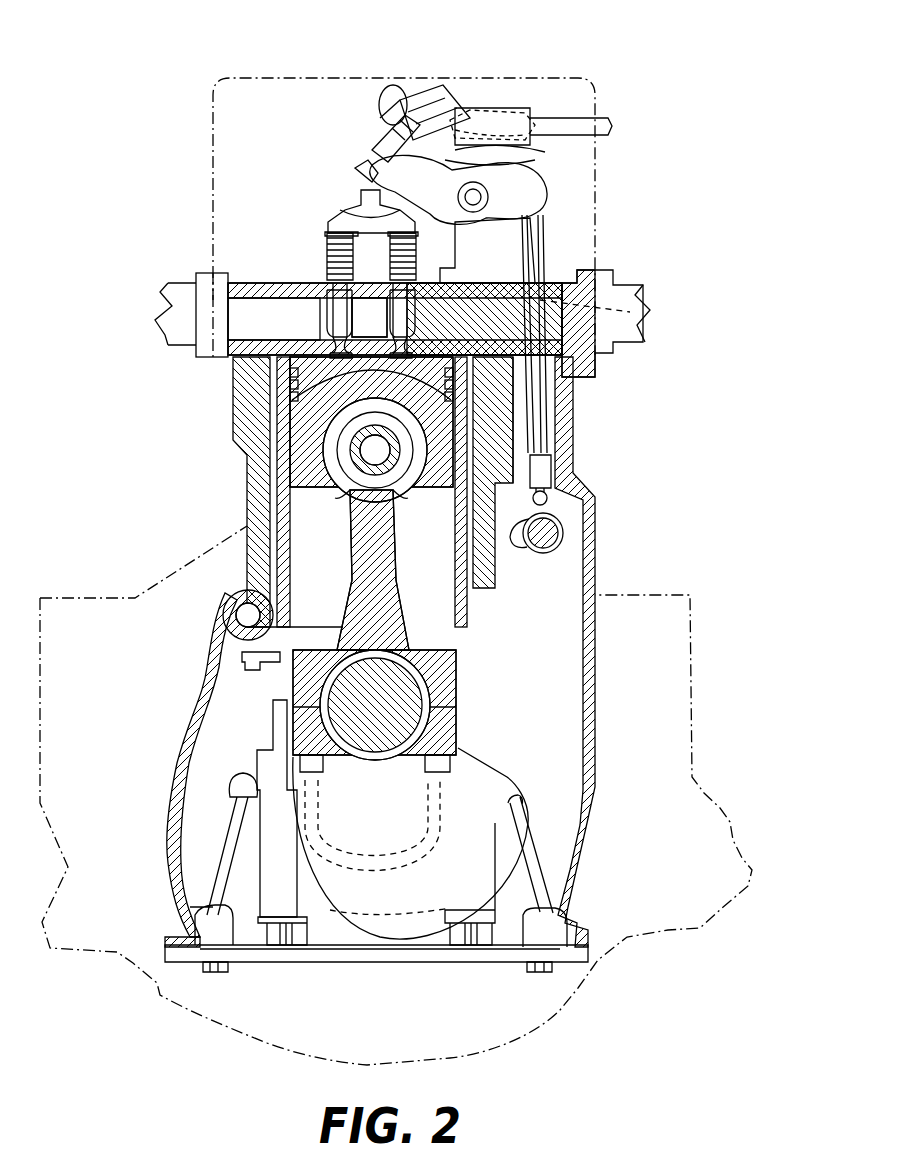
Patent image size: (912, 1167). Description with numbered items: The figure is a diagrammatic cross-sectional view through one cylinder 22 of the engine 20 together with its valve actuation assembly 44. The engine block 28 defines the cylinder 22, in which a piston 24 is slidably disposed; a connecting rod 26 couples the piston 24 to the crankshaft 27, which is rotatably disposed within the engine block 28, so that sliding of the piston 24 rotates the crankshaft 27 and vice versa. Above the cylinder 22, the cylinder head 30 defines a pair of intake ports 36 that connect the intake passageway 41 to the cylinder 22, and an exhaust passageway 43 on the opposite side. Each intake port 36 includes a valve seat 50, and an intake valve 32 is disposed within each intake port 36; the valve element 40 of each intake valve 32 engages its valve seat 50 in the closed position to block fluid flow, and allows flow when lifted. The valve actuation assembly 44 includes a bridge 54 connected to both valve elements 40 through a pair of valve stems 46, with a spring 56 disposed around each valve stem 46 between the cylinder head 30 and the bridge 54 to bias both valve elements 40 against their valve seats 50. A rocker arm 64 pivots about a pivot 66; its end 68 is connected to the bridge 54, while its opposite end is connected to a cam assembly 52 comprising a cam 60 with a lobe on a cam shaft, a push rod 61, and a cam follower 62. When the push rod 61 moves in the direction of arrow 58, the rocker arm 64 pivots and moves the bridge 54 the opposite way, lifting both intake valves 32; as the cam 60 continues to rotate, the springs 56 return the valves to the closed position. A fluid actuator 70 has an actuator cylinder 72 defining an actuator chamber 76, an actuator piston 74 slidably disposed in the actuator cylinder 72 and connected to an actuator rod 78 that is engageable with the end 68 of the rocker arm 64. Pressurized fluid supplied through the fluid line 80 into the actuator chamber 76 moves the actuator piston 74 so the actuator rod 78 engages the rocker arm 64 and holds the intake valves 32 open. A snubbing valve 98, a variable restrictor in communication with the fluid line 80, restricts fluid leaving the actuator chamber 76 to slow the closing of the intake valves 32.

The engine 20 is at (690, 192).
The cylinder 22 is at (298, 520).
The piston 24 is at (285, 460).
The connecting rod 26 is at (414, 620).
The crankshaft 27 is at (460, 782).
The engine block 28 is at (240, 570).
The cylinder head 30 is at (605, 350).
The intake valve 32 is at (330, 300).
The intake port 36 is at (333, 352).
The valve element 40 is at (376, 350).
The intake passageway 41 is at (223, 312).
The exhaust passageway 43 is at (618, 315).
The valve actuation assembly 44 is at (628, 75).
The valve stem 46 is at (327, 260).
The valve seat 50 is at (290, 385).
The cam assembly 52 is at (690, 455).
The bridge 54 is at (355, 210).
The spring 56 is at (328, 232).
The arrow 58 is at (595, 385).
The cam 60 is at (520, 555).
The push rod 61 is at (542, 437).
The cam follower 62 is at (547, 502).
The rocker arm 64 is at (500, 170).
The pivot 66 is at (545, 152).
The end of rocker arm 68 is at (362, 168).
The fluid actuator 70 is at (436, 85).
The actuator cylinder 72 is at (388, 110).
The actuator piston 74 is at (395, 100).
The actuator chamber 76 is at (440, 100).
The actuator rod 78 is at (385, 155).
The fluid line 80 is at (534, 120).
The snubbing valve 98 is at (515, 120).